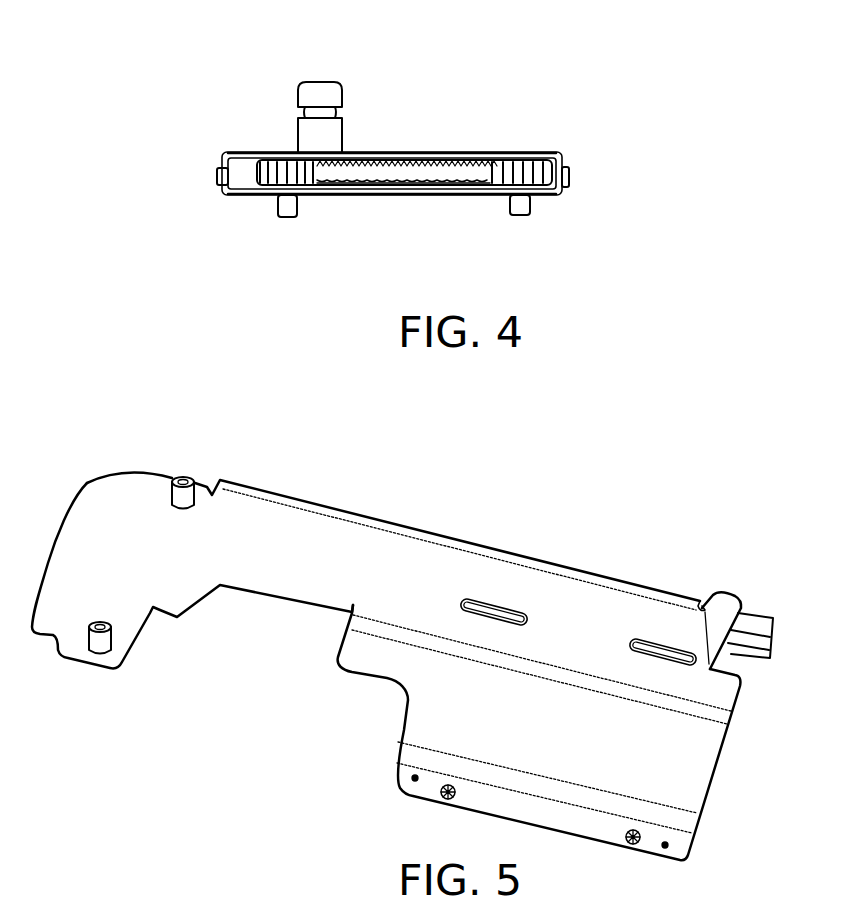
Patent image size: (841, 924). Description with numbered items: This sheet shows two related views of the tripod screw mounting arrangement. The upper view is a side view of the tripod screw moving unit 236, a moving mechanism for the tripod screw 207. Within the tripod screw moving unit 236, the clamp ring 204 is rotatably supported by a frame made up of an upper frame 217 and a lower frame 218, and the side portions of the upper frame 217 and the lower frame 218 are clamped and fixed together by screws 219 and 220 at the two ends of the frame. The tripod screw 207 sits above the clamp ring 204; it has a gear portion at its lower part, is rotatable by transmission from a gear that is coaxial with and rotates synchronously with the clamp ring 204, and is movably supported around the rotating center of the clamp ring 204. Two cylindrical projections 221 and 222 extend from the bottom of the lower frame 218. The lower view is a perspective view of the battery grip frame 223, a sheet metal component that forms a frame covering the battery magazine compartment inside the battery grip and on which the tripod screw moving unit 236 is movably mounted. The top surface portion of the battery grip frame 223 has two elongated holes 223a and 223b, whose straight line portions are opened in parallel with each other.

In FIG. 4, the tripod screw moving unit 236 is at (705, 41).
In FIG. 4, the upper frame 217 is at (250, 152).
In FIG. 4, the lower frame 218 is at (232, 197).
In FIG. 4, the screw 219 is at (216, 171).
In FIG. 4, the screw 220 is at (568, 177).
In FIG. 4, the tripod screw 207 is at (343, 96).
In FIG. 4, the clamp ring 204 is at (460, 170).
In FIG. 4, the cylindrical projection 221 is at (283, 207).
In FIG. 4, the cylindrical projection 222 is at (523, 205).
In FIG. 5, the battery grip frame 223 is at (290, 570).
In FIG. 5, the elongated hole 223a is at (503, 605).
In FIG. 5, the elongated hole 223b is at (660, 645).